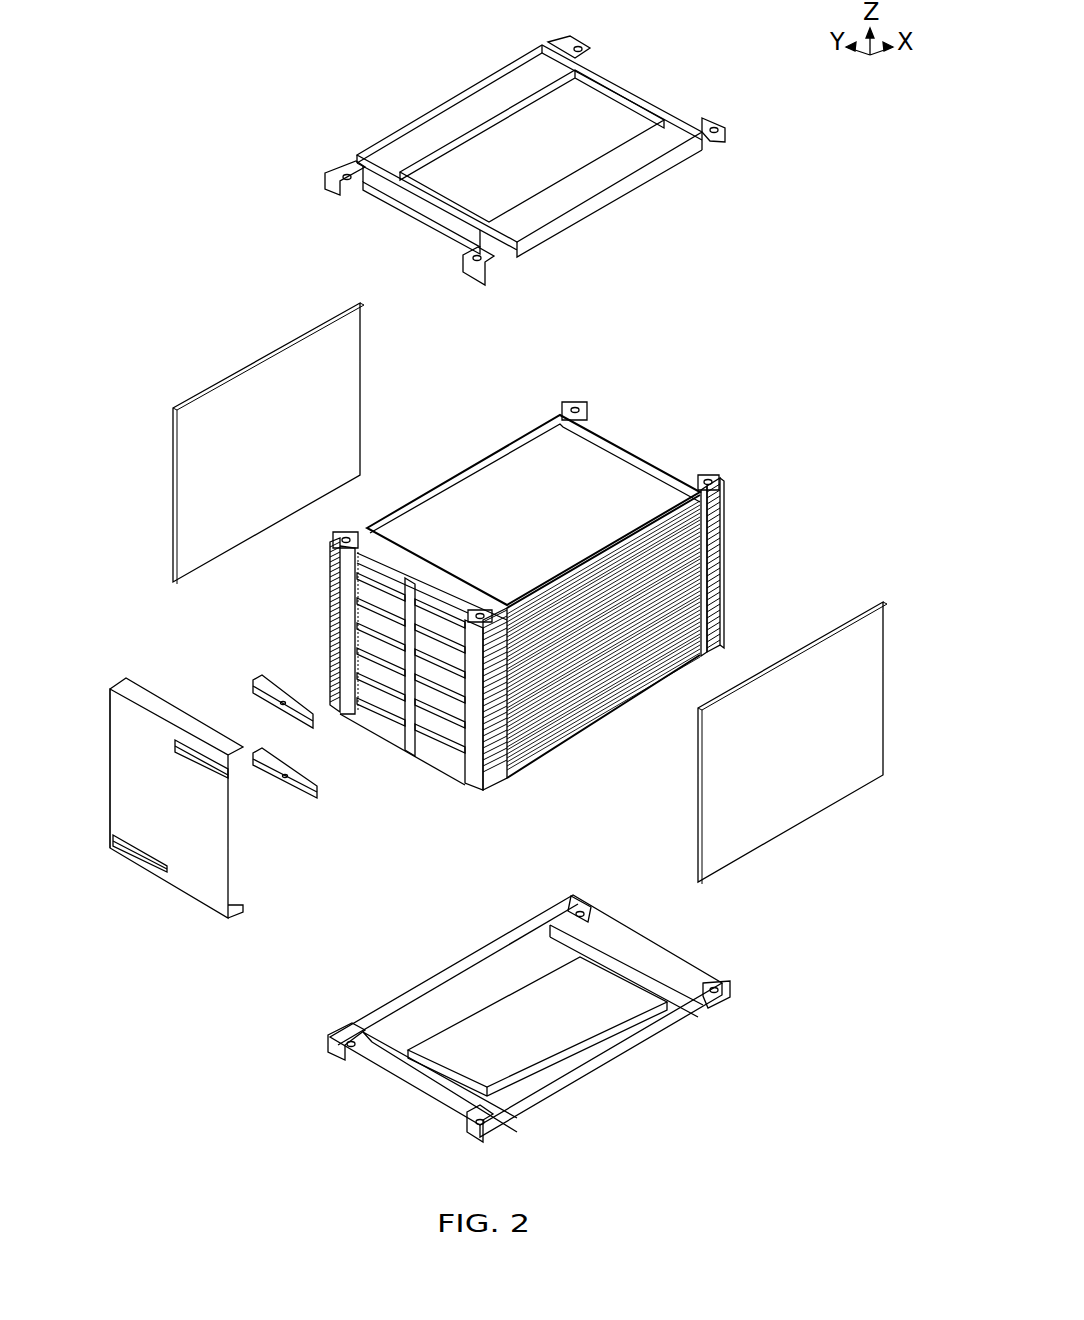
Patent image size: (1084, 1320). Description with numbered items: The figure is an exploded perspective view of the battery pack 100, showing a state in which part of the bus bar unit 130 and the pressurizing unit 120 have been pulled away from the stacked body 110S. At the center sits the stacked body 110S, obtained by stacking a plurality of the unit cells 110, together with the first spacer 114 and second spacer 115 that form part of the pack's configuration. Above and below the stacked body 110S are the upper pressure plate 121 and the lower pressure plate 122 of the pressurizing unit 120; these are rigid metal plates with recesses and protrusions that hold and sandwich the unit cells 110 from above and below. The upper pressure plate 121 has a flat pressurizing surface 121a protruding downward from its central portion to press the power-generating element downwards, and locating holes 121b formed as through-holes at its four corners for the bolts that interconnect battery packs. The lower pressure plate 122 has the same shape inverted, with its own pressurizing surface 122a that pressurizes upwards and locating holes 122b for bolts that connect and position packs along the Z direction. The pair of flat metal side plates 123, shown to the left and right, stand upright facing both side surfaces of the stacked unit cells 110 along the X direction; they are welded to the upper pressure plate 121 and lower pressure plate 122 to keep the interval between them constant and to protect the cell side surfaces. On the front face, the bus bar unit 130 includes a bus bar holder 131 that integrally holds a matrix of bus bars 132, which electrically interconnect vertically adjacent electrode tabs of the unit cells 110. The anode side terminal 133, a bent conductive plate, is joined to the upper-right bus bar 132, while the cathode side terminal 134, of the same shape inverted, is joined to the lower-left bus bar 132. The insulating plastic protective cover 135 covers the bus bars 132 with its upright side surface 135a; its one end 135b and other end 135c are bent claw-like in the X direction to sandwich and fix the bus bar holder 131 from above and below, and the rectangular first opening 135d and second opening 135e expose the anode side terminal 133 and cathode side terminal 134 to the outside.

The battery pack 100 is at (131, 38).
The unit cell 110 is at (627, 470).
The stacked body 110S is at (494, 618).
The first spacer 114 is at (496, 742).
The second spacer 115 is at (722, 602).
The pressurizing unit 120 is at (497, 154).
The upper pressure plate 121 is at (412, 117).
The pressurizing surface 121a is at (482, 178).
The locating holes 121b is at (331, 172).
The lower pressure plate 122 is at (497, 1018).
The pressurizing surface 122a is at (565, 998).
The locating holes 122b is at (340, 1035).
The side plate 123 is at (242, 372).
The bus bar unit 130 is at (353, 694).
The bus bar holder 131 is at (345, 600).
The bus bar 132 is at (382, 685).
The anode side terminal 133 is at (300, 795).
The cathode side terminal 134 is at (285, 733).
The protective cover 135 is at (209, 792).
The side surface 135a is at (222, 842).
The one end 135b is at (180, 718).
The other end 135c is at (243, 918).
The first opening 135d is at (205, 770).
The second opening 135e is at (143, 866).